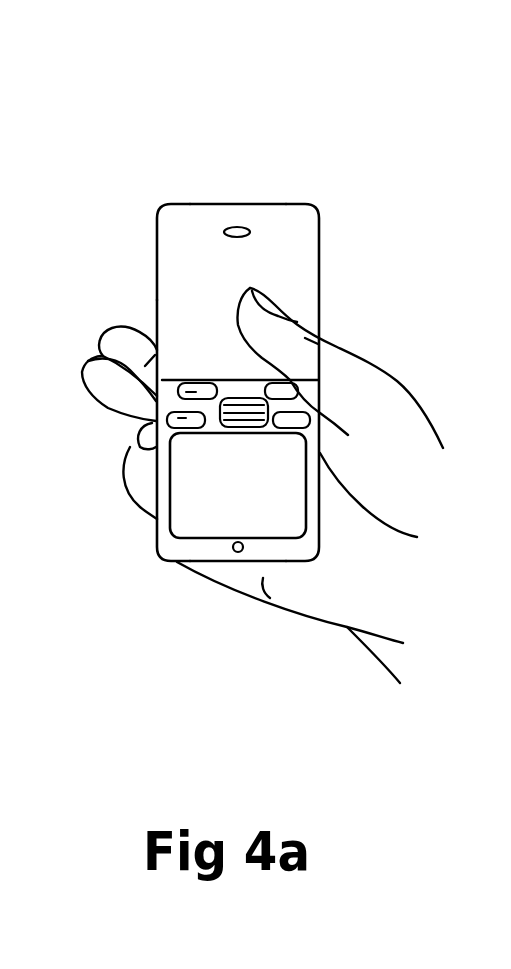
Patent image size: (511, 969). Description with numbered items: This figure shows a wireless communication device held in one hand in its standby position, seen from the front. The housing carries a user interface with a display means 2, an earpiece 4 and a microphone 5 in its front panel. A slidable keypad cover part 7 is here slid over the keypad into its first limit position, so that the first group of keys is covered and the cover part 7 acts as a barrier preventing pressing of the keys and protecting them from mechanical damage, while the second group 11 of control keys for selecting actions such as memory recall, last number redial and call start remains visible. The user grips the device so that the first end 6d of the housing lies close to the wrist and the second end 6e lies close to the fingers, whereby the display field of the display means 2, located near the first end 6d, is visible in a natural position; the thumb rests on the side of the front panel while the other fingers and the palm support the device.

The display means 2 is at (262, 513).
The earpiece 4 is at (236, 227).
The microphone 5 is at (238, 552).
The first end of the housing 6d is at (166, 572).
The second end of the housing 6e is at (280, 196).
The keypad cover part 7 is at (320, 287).
The second group of control keys 11 is at (168, 421).